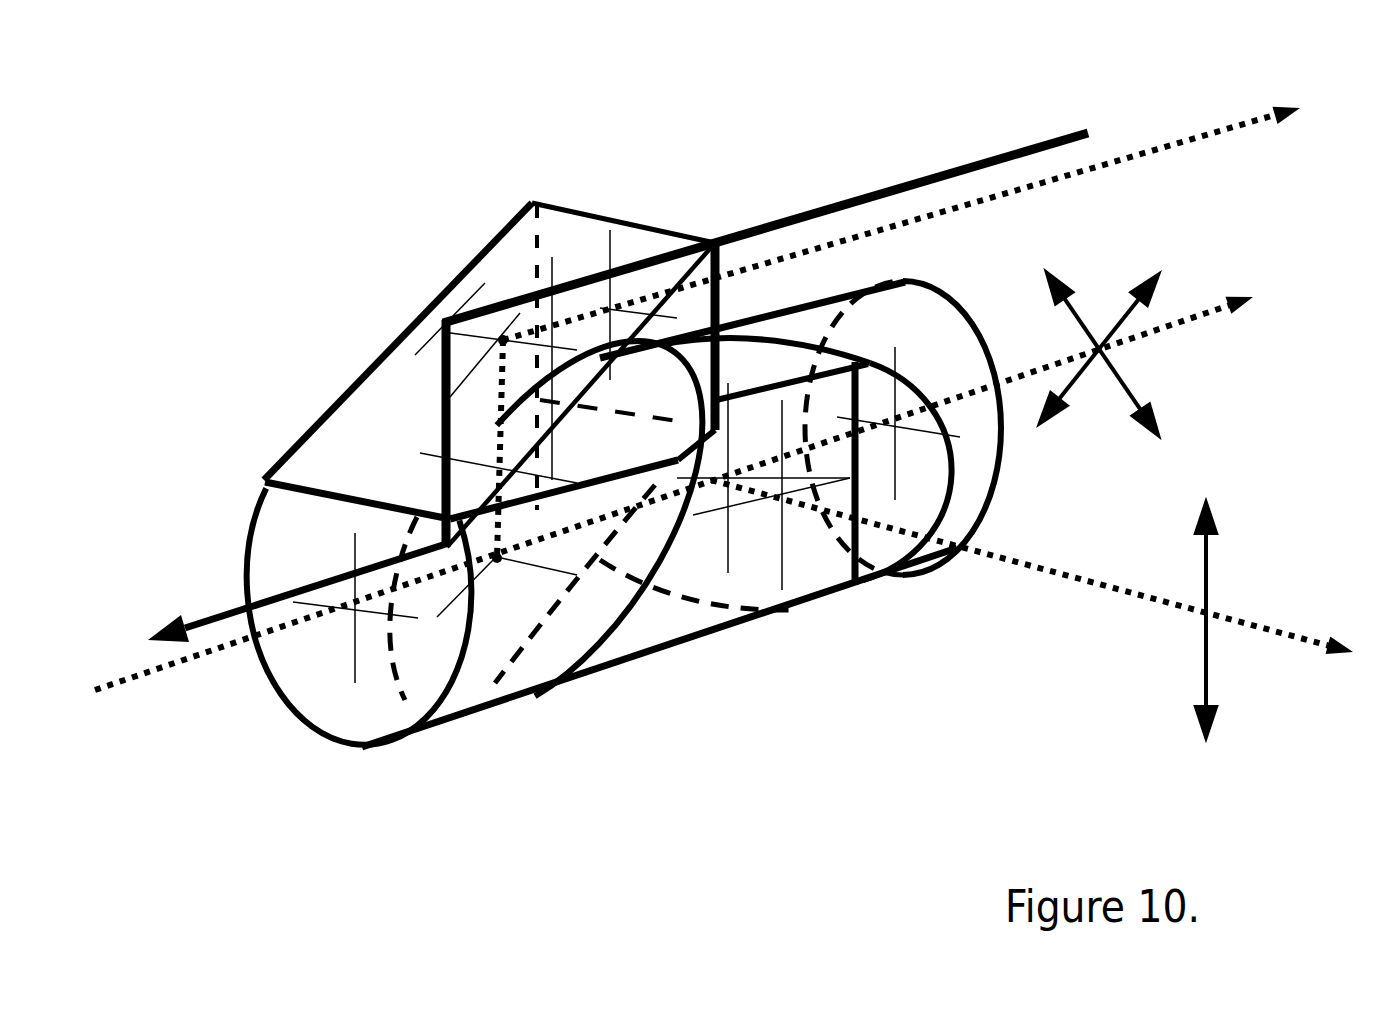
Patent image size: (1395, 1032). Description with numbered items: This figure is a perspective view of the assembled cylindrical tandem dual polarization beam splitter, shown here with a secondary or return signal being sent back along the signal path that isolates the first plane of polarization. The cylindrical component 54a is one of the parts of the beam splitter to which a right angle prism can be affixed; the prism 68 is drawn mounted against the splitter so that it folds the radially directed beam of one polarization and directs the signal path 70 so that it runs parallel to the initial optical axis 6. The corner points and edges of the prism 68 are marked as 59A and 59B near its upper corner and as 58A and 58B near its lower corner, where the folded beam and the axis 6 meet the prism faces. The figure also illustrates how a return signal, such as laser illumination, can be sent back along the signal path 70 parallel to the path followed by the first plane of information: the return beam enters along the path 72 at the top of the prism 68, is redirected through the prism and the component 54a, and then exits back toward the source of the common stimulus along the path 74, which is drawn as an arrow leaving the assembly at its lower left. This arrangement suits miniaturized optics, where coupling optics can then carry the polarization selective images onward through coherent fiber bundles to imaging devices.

The optical axis 6 is at (674, 525).
The component 54a is at (680, 647).
The lower corner point 58A is at (497, 558).
The lower corner edge 58B is at (449, 548).
The upper corner point 59A is at (503, 340).
The upper corner edge 59B is at (440, 315).
The prism 68 is at (373, 375).
The signal path 70 is at (901, 206).
The path 72 is at (887, 198).
The path 74 is at (213, 613).